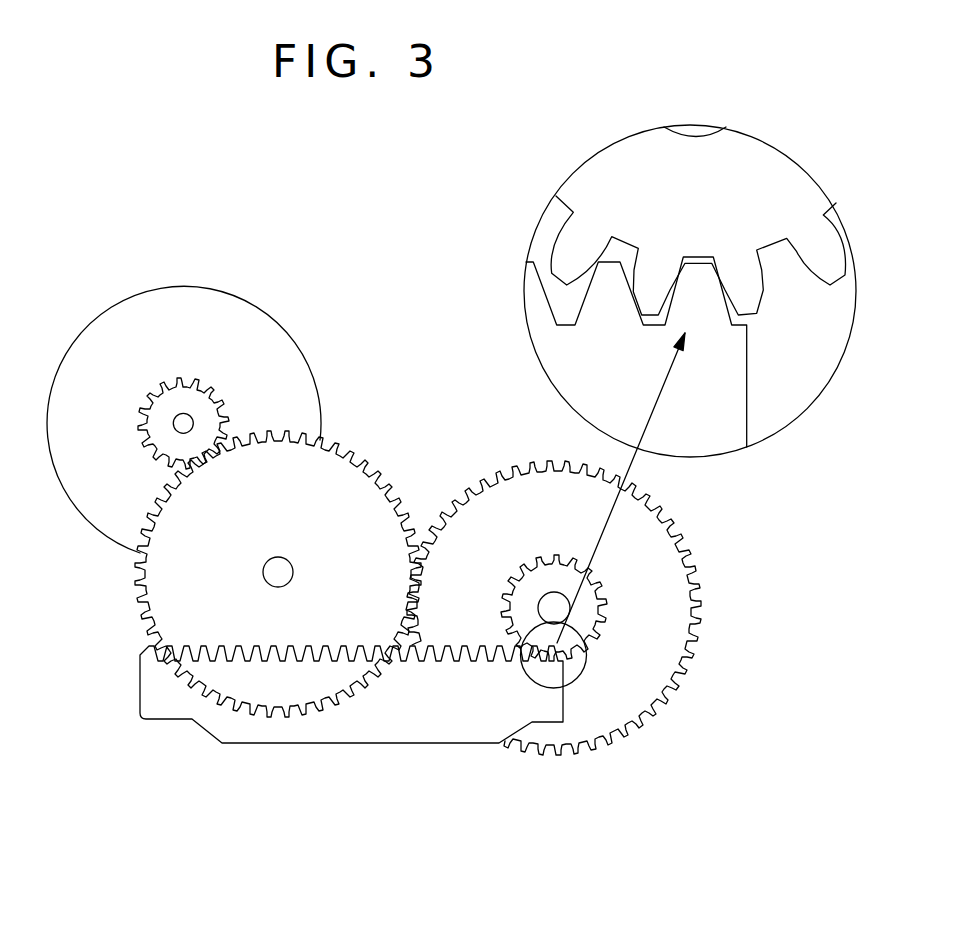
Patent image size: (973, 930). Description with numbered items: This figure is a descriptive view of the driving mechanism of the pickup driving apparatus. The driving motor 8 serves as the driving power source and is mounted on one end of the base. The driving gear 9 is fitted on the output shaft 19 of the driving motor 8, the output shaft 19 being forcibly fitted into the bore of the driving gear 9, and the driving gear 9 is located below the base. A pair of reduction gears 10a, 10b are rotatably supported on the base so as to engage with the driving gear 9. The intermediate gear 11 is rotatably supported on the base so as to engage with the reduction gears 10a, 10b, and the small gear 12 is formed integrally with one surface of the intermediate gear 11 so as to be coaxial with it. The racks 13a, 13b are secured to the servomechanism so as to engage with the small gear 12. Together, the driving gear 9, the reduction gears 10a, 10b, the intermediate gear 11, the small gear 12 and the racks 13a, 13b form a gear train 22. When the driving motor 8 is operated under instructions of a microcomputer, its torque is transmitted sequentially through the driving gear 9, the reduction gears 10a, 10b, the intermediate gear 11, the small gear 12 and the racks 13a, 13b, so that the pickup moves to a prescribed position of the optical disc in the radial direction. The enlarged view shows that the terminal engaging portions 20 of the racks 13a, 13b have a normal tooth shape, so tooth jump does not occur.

The driving motor 8 is at (222, 311).
The driving gear 9 is at (208, 388).
The output shaft 19 is at (194, 423).
The reduction gear 10a is at (307, 563).
The reduction gear 10b is at (347, 487).
The intermediate gear 11 is at (663, 542).
The small gear 12 is at (588, 607).
The rack 13a is at (351, 733).
The rack 13b is at (433, 733).
The gear train 22 is at (392, 307).
The terminal engaging portion 20 is at (708, 308).